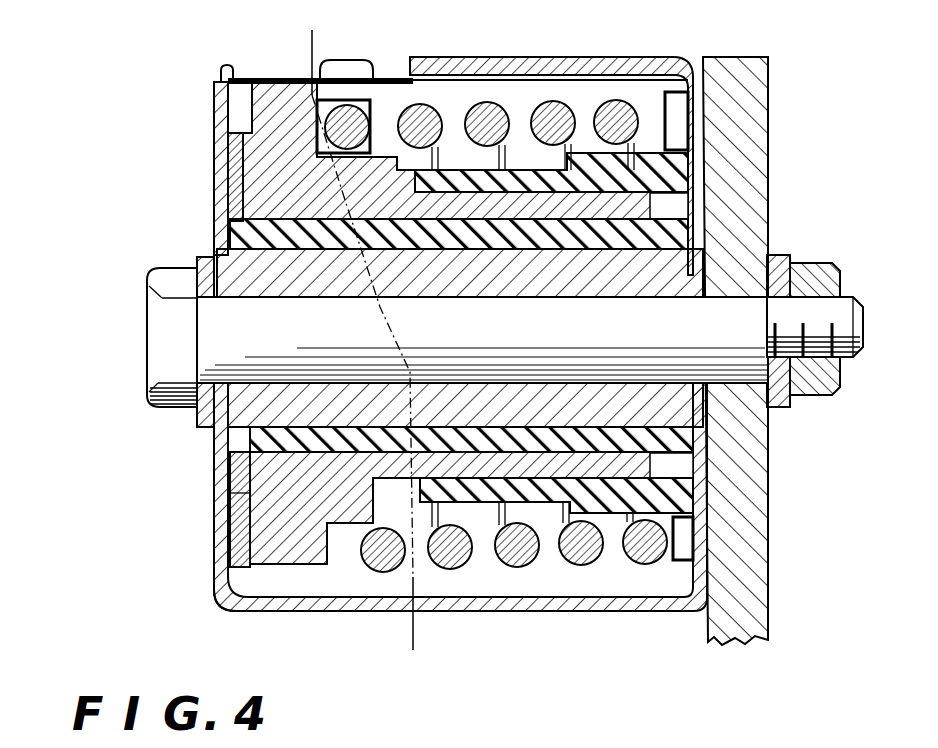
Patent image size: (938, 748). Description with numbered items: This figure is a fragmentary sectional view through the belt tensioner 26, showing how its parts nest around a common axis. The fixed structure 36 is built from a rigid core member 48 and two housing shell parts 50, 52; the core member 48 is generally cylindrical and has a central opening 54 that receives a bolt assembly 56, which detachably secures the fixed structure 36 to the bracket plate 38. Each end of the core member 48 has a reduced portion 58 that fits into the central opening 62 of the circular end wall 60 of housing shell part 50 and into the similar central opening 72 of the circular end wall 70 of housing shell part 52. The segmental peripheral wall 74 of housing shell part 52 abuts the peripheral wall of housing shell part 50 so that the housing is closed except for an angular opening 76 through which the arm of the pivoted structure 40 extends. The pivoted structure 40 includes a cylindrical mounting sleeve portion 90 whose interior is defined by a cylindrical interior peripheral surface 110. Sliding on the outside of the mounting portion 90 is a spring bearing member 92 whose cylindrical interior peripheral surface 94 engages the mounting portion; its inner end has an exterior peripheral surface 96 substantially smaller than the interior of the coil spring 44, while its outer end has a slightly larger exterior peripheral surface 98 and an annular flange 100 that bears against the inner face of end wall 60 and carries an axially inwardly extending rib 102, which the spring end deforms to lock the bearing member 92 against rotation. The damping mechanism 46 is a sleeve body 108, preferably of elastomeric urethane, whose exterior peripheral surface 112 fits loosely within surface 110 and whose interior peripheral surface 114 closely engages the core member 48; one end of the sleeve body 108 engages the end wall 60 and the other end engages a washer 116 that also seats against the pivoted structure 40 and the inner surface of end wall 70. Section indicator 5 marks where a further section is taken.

The belt tensioner 26 is at (200, 128).
The angular opening 76 is at (226, 72).
The section line 5- 5 is at (358, 45).
The cylindrical interior peripheral surface 94 is at (462, 150).
The coil spring 44 is at (510, 170).
The cylindrical mounting sleeve portion 90 is at (566, 157).
The axially inwardly extending rib 102 is at (757, 100).
The bracket plate 38 is at (747, 149).
The reduced portion 58 is at (707, 271).
The bolt assembly 56 is at (828, 261).
The central opening 54 is at (230, 383).
The central opening 72 is at (215, 250).
The washer 116 is at (230, 200).
The rigid core member 48 is at (230, 229).
The exterior peripheral surface 96 is at (487, 230).
The sleeve body 108 is at (552, 238).
The central opening 62 is at (703, 407).
The interior peripheral surface 114 is at (712, 428).
The damping mechanism 46 is at (705, 455).
The circular end wall 60 is at (695, 511).
The annular flange 100 is at (693, 537).
The housing shell part 50 is at (636, 612).
The exterior peripheral surface 98 is at (615, 522).
The fixed structure 36 is at (533, 616).
The spring bearing member 92 is at (514, 558).
The segmental peripheral wall 74 is at (312, 612).
The housing shell part 52 is at (255, 612).
The pivoted structure 40 is at (243, 574).
The circular end wall 70 is at (217, 530).
The exterior peripheral surface 112 is at (236, 493).
The cylindrical interior peripheral surface 110 is at (224, 457).